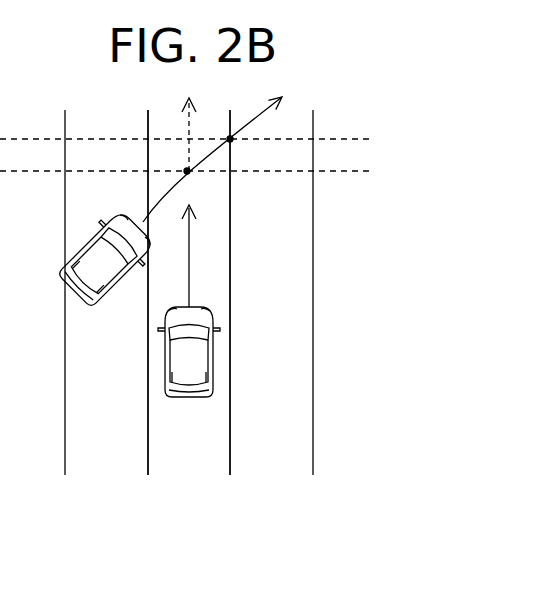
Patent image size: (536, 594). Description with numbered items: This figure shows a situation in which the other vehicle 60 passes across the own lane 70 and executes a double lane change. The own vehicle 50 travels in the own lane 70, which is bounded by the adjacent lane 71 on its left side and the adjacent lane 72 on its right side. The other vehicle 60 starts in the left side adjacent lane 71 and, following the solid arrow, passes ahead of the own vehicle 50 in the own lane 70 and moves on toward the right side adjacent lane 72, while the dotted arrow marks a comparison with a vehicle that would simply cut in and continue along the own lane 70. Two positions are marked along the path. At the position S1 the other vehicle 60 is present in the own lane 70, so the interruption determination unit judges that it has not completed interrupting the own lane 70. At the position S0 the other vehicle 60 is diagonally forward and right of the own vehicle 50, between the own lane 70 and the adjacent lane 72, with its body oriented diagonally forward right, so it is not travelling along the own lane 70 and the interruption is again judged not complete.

The own vehicle 50 is at (210, 378).
The other vehicle 60 is at (72, 259).
The own lane 70 is at (200, 455).
The adjacent lane 71 is at (118, 455).
The adjacent lane 72 is at (283, 455).
The position S0 is at (201, 172).
The position S1 is at (201, 140).